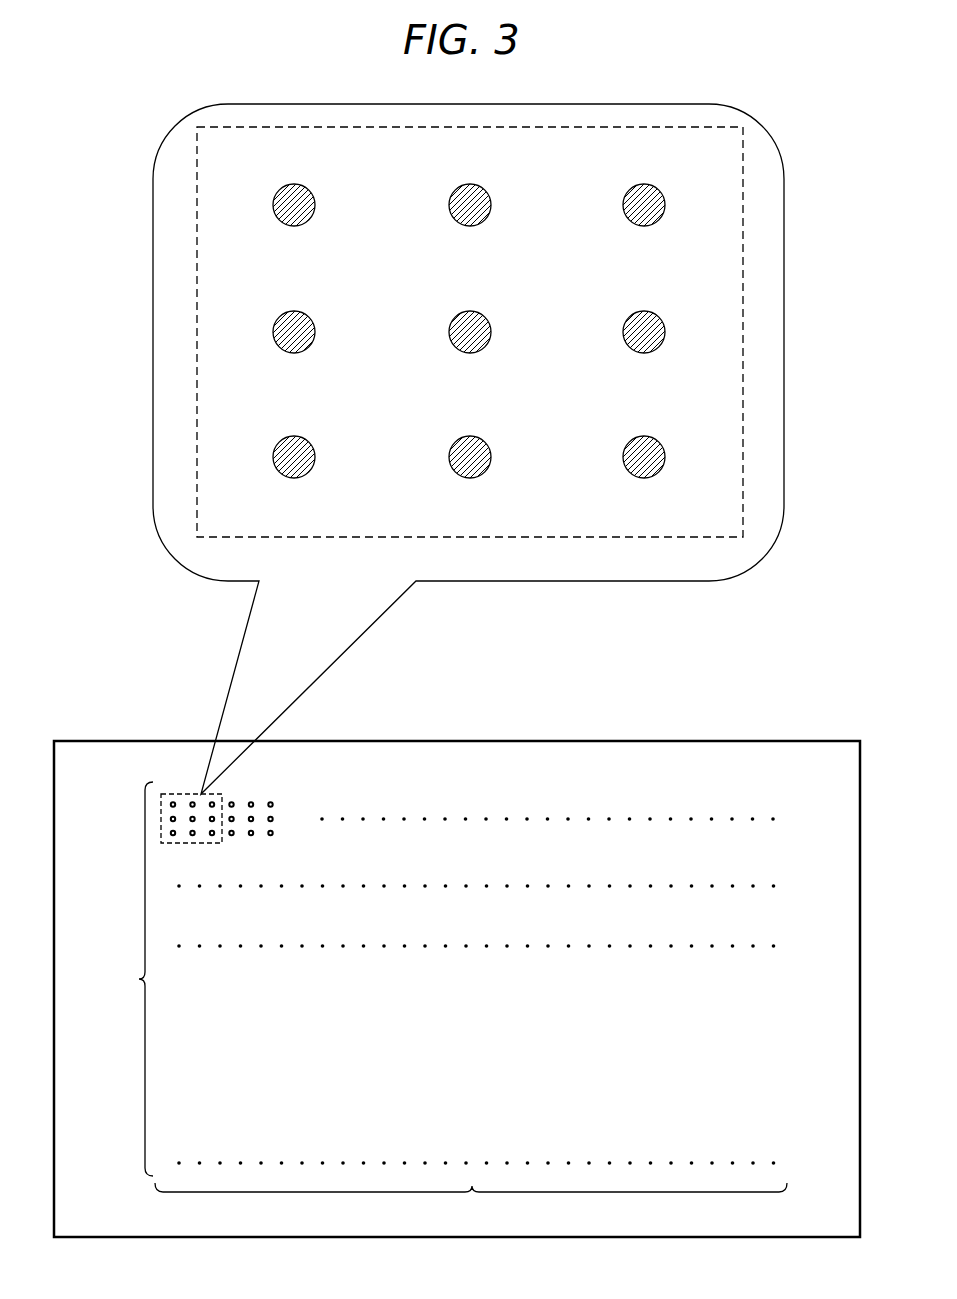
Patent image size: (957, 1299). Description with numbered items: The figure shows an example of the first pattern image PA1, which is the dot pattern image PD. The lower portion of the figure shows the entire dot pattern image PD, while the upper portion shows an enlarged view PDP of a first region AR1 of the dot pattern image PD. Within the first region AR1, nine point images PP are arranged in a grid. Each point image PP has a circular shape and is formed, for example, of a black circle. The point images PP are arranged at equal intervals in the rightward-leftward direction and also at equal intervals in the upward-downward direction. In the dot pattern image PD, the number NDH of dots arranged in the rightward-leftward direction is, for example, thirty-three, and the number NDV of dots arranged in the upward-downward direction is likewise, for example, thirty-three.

The point image PP is at (308, 191).
The first region AR1 is at (743, 254).
The enlarged view PDP is at (784, 393).
The dot pattern image PD is at (457, 972).
The first pattern image PA1 is at (700, 741).
The number of dots arranged in the upward-downward direction NDV is at (116, 979).
The number of dots arranged in the rightward-leftward direction NDH is at (471, 1205).